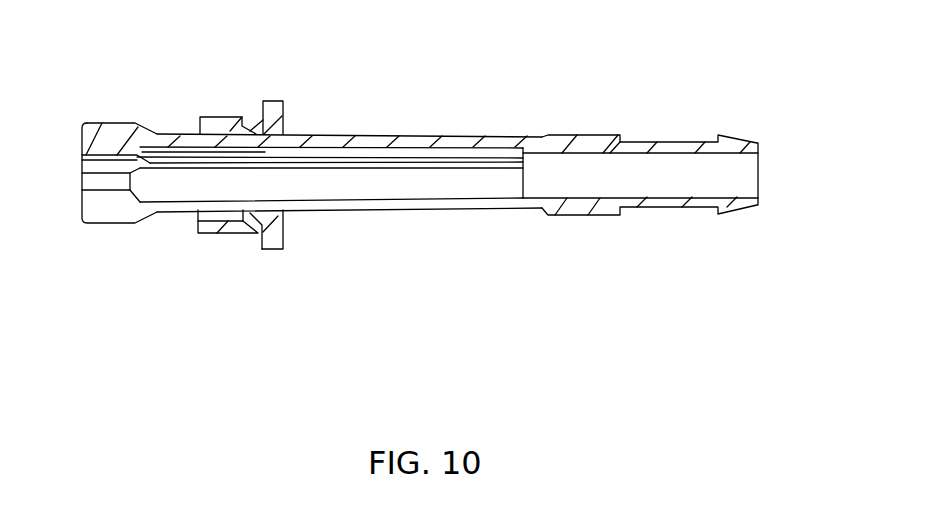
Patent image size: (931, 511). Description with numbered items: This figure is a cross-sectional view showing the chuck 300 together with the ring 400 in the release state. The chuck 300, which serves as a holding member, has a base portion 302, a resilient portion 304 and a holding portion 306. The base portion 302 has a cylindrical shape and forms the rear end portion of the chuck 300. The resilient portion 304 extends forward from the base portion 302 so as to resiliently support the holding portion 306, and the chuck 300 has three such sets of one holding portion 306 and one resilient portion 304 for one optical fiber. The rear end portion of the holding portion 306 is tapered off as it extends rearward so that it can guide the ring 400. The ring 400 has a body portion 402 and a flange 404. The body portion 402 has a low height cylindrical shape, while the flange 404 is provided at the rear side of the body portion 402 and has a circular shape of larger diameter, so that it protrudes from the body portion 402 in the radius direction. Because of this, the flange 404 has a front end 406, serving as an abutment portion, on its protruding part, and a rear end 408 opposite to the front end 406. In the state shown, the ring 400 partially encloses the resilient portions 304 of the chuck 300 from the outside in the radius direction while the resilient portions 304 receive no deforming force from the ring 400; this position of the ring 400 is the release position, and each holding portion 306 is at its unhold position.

The chuck 300 is at (497, 100).
The base portion 302 is at (598, 135).
The resilient portion 304 is at (423, 134).
The holding portion 306 is at (97, 122).
The ring 400 is at (272, 85).
The body portion 402 is at (222, 235).
The flange 404 is at (270, 250).
The front end 406 is at (259, 117).
The rear end 408 is at (285, 118).